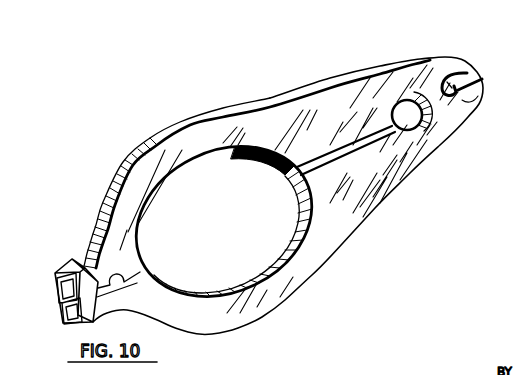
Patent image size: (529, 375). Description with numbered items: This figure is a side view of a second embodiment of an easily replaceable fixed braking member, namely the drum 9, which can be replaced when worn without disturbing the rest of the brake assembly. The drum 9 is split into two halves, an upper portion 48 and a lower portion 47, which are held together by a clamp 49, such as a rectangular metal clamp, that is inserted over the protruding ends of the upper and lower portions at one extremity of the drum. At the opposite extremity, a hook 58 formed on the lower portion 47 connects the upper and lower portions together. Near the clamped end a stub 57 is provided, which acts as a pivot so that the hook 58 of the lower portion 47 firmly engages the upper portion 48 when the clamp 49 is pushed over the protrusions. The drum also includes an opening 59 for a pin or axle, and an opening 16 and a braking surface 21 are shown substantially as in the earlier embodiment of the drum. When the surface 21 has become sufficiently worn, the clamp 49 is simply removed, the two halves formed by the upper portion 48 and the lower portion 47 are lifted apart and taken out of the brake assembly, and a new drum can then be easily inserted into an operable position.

The drum 9 is at (330, 127).
The upper portion 48 is at (274, 140).
The lower portion 47 is at (309, 281).
The surface 21 is at (270, 262).
The opening 16 is at (183, 267).
The opening 59 is at (404, 118).
The hook 58 is at (471, 108).
The clamp 49 is at (74, 264).
The stub 57 is at (140, 288).